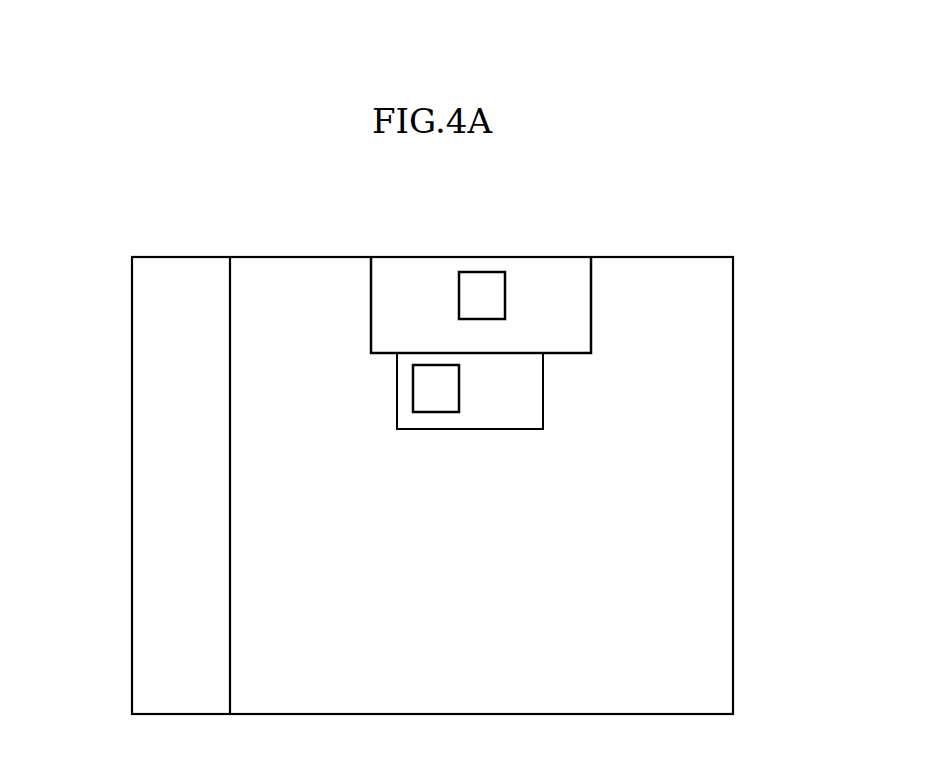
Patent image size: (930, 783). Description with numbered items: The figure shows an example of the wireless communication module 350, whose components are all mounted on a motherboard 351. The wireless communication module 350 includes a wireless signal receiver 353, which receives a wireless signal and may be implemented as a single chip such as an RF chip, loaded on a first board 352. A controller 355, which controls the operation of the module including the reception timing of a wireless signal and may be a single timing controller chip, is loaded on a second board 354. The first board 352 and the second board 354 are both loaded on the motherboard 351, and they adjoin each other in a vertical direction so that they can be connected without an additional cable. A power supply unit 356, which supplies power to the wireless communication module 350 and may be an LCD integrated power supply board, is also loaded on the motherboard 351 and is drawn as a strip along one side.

The wireless communication module 350 is at (662, 245).
The motherboard 351 is at (713, 558).
The first board 352 is at (525, 414).
The wireless signal receiver 353 is at (442, 377).
The second board 354 is at (564, 303).
The controller 355 is at (479, 288).
The power supply unit 356 is at (151, 467).